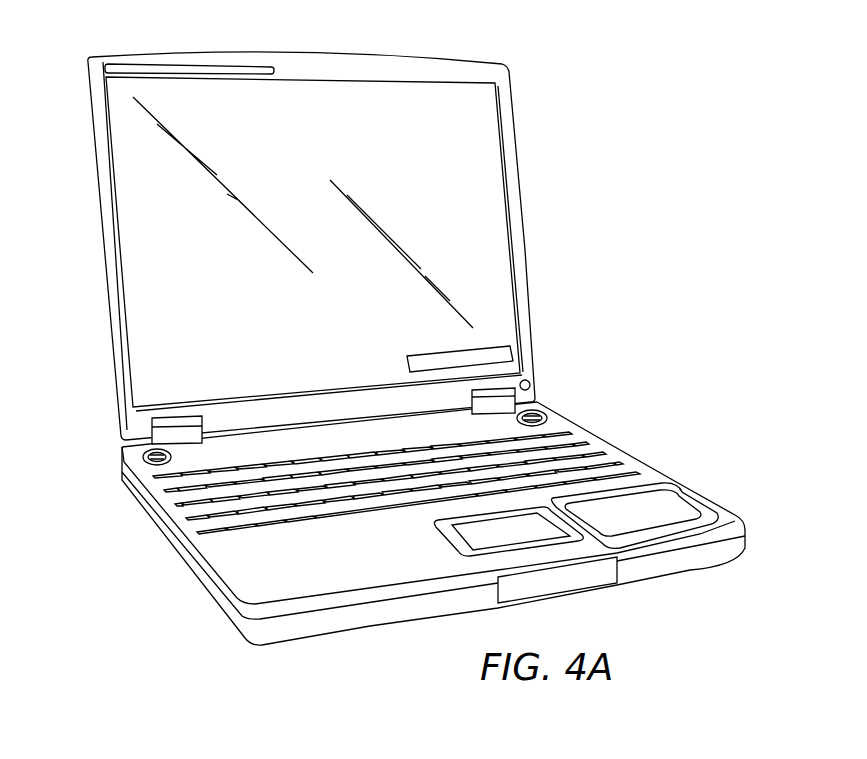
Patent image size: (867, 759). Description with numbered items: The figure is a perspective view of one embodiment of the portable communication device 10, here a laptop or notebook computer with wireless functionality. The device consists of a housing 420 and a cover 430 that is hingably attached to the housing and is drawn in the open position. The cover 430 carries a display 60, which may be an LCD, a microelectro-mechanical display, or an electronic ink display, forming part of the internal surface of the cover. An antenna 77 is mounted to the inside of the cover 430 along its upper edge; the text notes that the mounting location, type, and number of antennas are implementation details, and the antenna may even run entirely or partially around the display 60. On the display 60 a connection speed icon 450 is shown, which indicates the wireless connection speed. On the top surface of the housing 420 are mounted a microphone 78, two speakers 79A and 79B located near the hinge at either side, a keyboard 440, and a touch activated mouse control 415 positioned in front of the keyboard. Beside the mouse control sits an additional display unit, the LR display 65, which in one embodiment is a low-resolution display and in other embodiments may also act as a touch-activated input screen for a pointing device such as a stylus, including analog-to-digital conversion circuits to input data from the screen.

The portable communication device 10 is at (558, 92).
The display 60 is at (487, 217).
The antenna 77 is at (213, 65).
The microphone 78 is at (532, 384).
The speaker 79A is at (547, 413).
The speaker 79B is at (143, 456).
The LR display 65 is at (670, 503).
The touch activated mouse control 415 is at (474, 537).
The housing 420 is at (687, 560).
The cover 430 is at (323, 62).
The keyboard 440 is at (597, 455).
The connection speed icon 450 is at (418, 355).